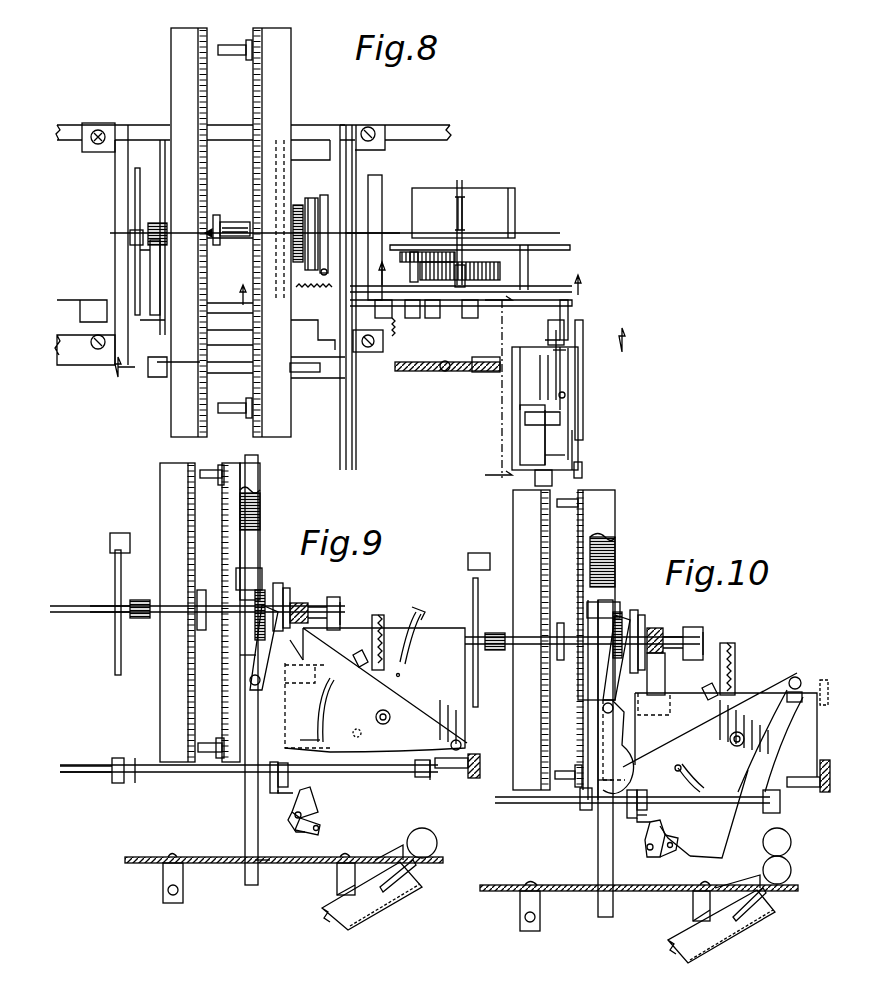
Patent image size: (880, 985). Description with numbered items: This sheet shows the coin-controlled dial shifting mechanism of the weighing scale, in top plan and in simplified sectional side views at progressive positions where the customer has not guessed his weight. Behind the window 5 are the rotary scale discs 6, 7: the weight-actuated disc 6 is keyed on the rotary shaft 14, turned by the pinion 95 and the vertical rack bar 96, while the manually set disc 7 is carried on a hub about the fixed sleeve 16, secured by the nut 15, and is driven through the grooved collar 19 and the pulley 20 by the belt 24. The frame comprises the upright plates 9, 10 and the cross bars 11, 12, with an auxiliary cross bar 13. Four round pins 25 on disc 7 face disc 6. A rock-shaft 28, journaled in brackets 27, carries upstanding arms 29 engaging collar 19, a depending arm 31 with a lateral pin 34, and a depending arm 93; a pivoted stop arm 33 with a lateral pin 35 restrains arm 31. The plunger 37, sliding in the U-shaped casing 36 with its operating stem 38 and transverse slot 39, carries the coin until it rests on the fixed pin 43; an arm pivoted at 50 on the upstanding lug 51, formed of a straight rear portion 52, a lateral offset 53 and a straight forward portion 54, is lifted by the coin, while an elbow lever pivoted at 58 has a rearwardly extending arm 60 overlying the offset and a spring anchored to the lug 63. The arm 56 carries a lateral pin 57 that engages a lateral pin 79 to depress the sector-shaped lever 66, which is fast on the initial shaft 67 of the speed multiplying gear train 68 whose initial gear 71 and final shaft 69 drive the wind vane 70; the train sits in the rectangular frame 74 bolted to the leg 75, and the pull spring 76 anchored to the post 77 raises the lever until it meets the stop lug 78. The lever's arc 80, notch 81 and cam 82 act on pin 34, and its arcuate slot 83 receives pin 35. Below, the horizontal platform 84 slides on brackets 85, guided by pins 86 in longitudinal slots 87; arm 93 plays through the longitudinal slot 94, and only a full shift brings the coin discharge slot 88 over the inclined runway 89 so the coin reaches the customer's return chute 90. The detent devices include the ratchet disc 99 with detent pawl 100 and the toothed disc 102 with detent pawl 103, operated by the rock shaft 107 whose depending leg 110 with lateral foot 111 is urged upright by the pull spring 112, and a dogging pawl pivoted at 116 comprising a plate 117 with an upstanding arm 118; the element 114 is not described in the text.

In FIG. 8, the rectangular window 5 is at (498, 393).
In FIG. 8, the rotary scale disc 6 is at (170, 84).
In FIG. 9, the rotary scale disc 6 is at (160, 491).
In FIG. 10, the rotary scale disc 6 is at (513, 517).
In FIG. 8, the rotary scale disc 7 is at (292, 84).
In FIG. 9, the rotary scale disc 7 is at (261, 478).
In FIG. 10, the rotary scale disc 7 is at (615, 515).
In FIG. 8, the upright plate 9 is at (232, 322).
In FIG. 8, the upright plate 10 is at (228, 128).
In FIG. 8, the cross bar 11 is at (118, 184).
In FIG. 8, the cross bar 12 is at (356, 170).
In FIG. 9, the cross bar 12 is at (305, 595).
In FIG. 10, the cross bar 12 is at (683, 643).
In FIG. 8, the auxiliary cross bar 13 is at (381, 200).
In FIG. 8, the rotary shaft 14 is at (198, 235).
In FIG. 9, the rotary shaft 14 is at (198, 593).
In FIG. 10, the rotary shaft 14 is at (558, 623).
In FIG. 8, the nut 15 is at (307, 244).
In FIG. 9, the nut 15 is at (316, 636).
In FIG. 8, the fixed sleeve 16 is at (477, 278).
In FIG. 8, the grooved collar 19 is at (316, 205).
In FIG. 9, the grooved collar 19 is at (280, 588).
In FIG. 10, the grooved collar 19 is at (636, 612).
In FIG. 8, the pulley 20 is at (326, 198).
In FIG. 9, the pulley 20 is at (292, 590).
In FIG. 10, the pulley 20 is at (650, 625).
In FIG. 8, the belt 24 is at (322, 276).
In FIG. 8, the round pins 25 is at (230, 43).
In FIG. 9, the round pins 25 is at (208, 470).
In FIG. 10, the round pins 25 is at (560, 508).
In FIG. 8, the brackets 27 is at (310, 150).
In FIG. 8, the rock-shaft 28 is at (270, 251).
In FIG. 9, the rock-shaft 28 is at (252, 683).
In FIG. 10, the rock-shaft 28 is at (605, 708).
In FIG. 9, the upstanding arms 29 is at (237, 643).
In FIG. 10, the upstanding arms 29 is at (603, 682).
In FIG. 10, the depending arm 31 is at (620, 732).
In FIG. 9, the pivoted stop arm 33 is at (301, 730).
In FIG. 10, the lateral pin 34 is at (602, 780).
In FIG. 9, the lateral pin 35 is at (322, 742).
In FIG. 10, the lateral pin 35 is at (682, 768).
In FIG. 8, the U-shaped casing 36 is at (513, 440).
In FIG. 8, the plunger 37 is at (523, 455).
In FIG. 8, the operating stem 38 is at (553, 481).
In FIG. 8, the transverse slot 39 is at (538, 422).
In FIG. 10, the fixed pin 43 is at (792, 848).
In FIG. 8, the pivot 50 is at (584, 470).
In FIG. 8, the upstanding lug 51 is at (566, 462).
In FIG. 8, the straight rear portion 52 is at (575, 447).
In FIG. 8, the lateral offset 53 is at (570, 403).
In FIG. 8, the straight forward portion 54 is at (540, 388).
In FIG. 8, the arm 56 is at (584, 376).
In FIG. 9, the arm 56 is at (480, 765).
In FIG. 10, the arm 56 is at (827, 770).
In FIG. 8, the lateral pin 57 is at (546, 330).
In FIG. 9, the lateral pin 57 is at (472, 778).
In FIG. 10, the lateral pin 57 is at (796, 702).
In FIG. 8, the pivot 58 is at (560, 357).
In FIG. 8, the rearwardly extending arm 60 is at (558, 364).
In FIG. 8, the lug 63 is at (566, 395).
In FIG. 8, the sector-shaped lever 66 is at (548, 302).
In FIG. 9, the sector-shaped lever 66 is at (376, 690).
In FIG. 10, the sector-shaped lever 66 is at (659, 757).
In FIG. 8, the initial shaft 67 is at (470, 320).
In FIG. 9, the initial shaft 67 is at (390, 712).
In FIG. 10, the initial shaft 67 is at (742, 733).
In FIG. 8, the speed multiplying gear train 68 is at (505, 259).
In FIG. 8, the final shaft 69 is at (463, 186).
In FIG. 8, the wind vane 70 is at (495, 196).
In FIG. 9, the wind vane 70 is at (420, 632).
In FIG. 8, the initial gear 71 is at (502, 270).
In FIG. 8, the rectangular frame 74 is at (536, 240).
In FIG. 10, the leg 75 is at (665, 678).
In FIG. 9, the pull spring 76 is at (381, 640).
In FIG. 10, the pull spring 76 is at (737, 667).
In FIG. 8, the post 77 is at (437, 316).
In FIG. 9, the post 77 is at (381, 617).
In FIG. 10, the post 77 is at (736, 652).
In FIG. 8, the stop lug 78 is at (412, 318).
In FIG. 9, the stop lug 78 is at (358, 653).
In FIG. 10, the stop lug 78 is at (706, 685).
In FIG. 8, the lateral pin 79 is at (570, 313).
In FIG. 9, the lateral pin 79 is at (461, 742).
In FIG. 10, the lateral pin 79 is at (797, 678).
In FIG. 9, the arc 80 is at (250, 658).
In FIG. 10, the arc 80 is at (645, 812).
In FIG. 9, the notch 81 is at (300, 683).
In FIG. 10, the notch 81 is at (676, 836).
In FIG. 10, the cam 82 is at (690, 845).
In FIG. 9, the arcuate slot 83 is at (326, 702).
In FIG. 10, the arcuate slot 83 is at (695, 782).
In FIG. 9, the horizontal platform 84 is at (295, 864).
In FIG. 10, the horizontal platform 84 is at (658, 892).
In FIG. 9, the brackets 85 is at (184, 878).
In FIG. 10, the brackets 85 is at (520, 907).
In FIG. 8, the pins 86 is at (452, 356).
In FIG. 9, the pins 86 is at (175, 855).
In FIG. 10, the pins 86 is at (532, 882).
In FIG. 8, the longitudinal slots 87 is at (432, 371).
In FIG. 9, the longitudinal slots 87 is at (150, 857).
In FIG. 10, the longitudinal slots 87 is at (514, 886).
In FIG. 8, the coin discharge slot 88 is at (486, 357).
In FIG. 9, the coin discharge slot 88 is at (376, 857).
In FIG. 10, the coin discharge slot 88 is at (742, 885).
In FIG. 8, the inclined runway 89 is at (506, 341).
In FIG. 9, the inclined runway 89 is at (408, 870).
In FIG. 10, the inclined runway 89 is at (765, 895).
In FIG. 9, the customer's return chute 90 is at (368, 907).
In FIG. 10, the customer's return chute 90 is at (745, 935).
In FIG. 8, the depending arm 93 is at (305, 372).
In FIG. 9, the depending arm 93 is at (245, 806).
In FIG. 10, the depending arm 93 is at (598, 834).
In FIG. 8, the longitudinal slot 94 is at (332, 372).
In FIG. 9, the longitudinal slot 94 is at (272, 860).
In FIG. 10, the longitudinal slot 94 is at (622, 887).
In FIG. 8, the pinion 95 is at (157, 225).
In FIG. 9, the pinion 95 is at (140, 600).
In FIG. 10, the pinion 95 is at (494, 633).
In FIG. 8, the vertical rack bar 96 is at (152, 255).
In FIG. 8, the ratchet disc 99 is at (135, 196).
In FIG. 9, the ratchet disc 99 is at (115, 572).
In FIG. 10, the ratchet disc 99 is at (473, 593).
In FIG. 8, the detent pawl 100 is at (140, 228).
In FIG. 9, the detent pawl 100 is at (118, 533).
In FIG. 10, the detent pawl 100 is at (484, 546).
In FIG. 8, the toothed disc 102 is at (300, 207).
In FIG. 9, the toothed disc 102 is at (261, 586).
In FIG. 10, the toothed disc 102 is at (617, 635).
In FIG. 9, the detent pawl 103 is at (249, 568).
In FIG. 10, the detent pawl 103 is at (605, 603).
In FIG. 8, the rock shaft 107 is at (212, 305).
In FIG. 9, the rock shaft 107 is at (372, 772).
In FIG. 10, the rock shaft 107 is at (542, 803).
In FIG. 9, the depending leg 110 is at (290, 778).
In FIG. 10, the depending leg 110 is at (648, 813).
In FIG. 8, the lateral foot 111 is at (397, 322).
In FIG. 9, the lateral foot 111 is at (292, 793).
In FIG. 10, the lateral foot 111 is at (648, 825).
In FIG. 8, the pull spring 112 is at (403, 335).
In FIG. 9, the block 114 is at (415, 758).
In FIG. 10, the block 114 is at (774, 813).
In FIG. 9, the pivot 116 is at (320, 825).
In FIG. 10, the pivot 116 is at (678, 850).
In FIG. 9, the plate 117 is at (295, 825).
In FIG. 10, the plate 117 is at (665, 858).
In FIG. 9, the upstanding arm 118 is at (310, 795).
In FIG. 10, the upstanding arm 118 is at (647, 850).